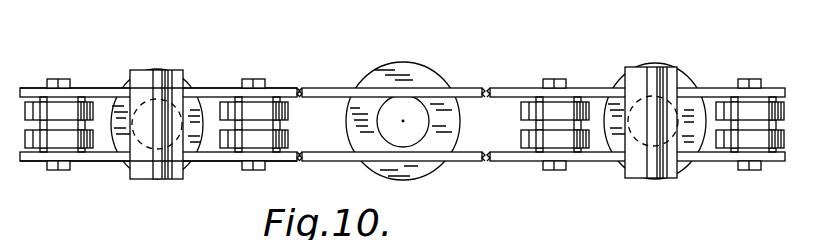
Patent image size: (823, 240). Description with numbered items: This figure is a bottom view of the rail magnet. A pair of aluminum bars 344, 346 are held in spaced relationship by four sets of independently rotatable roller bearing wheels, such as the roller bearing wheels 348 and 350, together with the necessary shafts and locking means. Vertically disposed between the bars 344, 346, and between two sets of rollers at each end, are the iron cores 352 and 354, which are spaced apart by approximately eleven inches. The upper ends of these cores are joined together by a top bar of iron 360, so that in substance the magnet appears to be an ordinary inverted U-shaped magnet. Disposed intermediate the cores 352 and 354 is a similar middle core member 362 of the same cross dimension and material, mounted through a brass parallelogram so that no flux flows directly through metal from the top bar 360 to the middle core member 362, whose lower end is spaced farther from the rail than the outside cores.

The aluminum bar 344 is at (41, 91).
The aluminum bar 346 is at (101, 158).
The roller bearing wheel 348 is at (77, 108).
The roller bearing wheel 350 is at (40, 140).
The iron core 352 is at (185, 90).
The iron core 354 is at (672, 90).
The top bar of iron 360 is at (156, 78).
The middle core member 362 is at (650, 72).